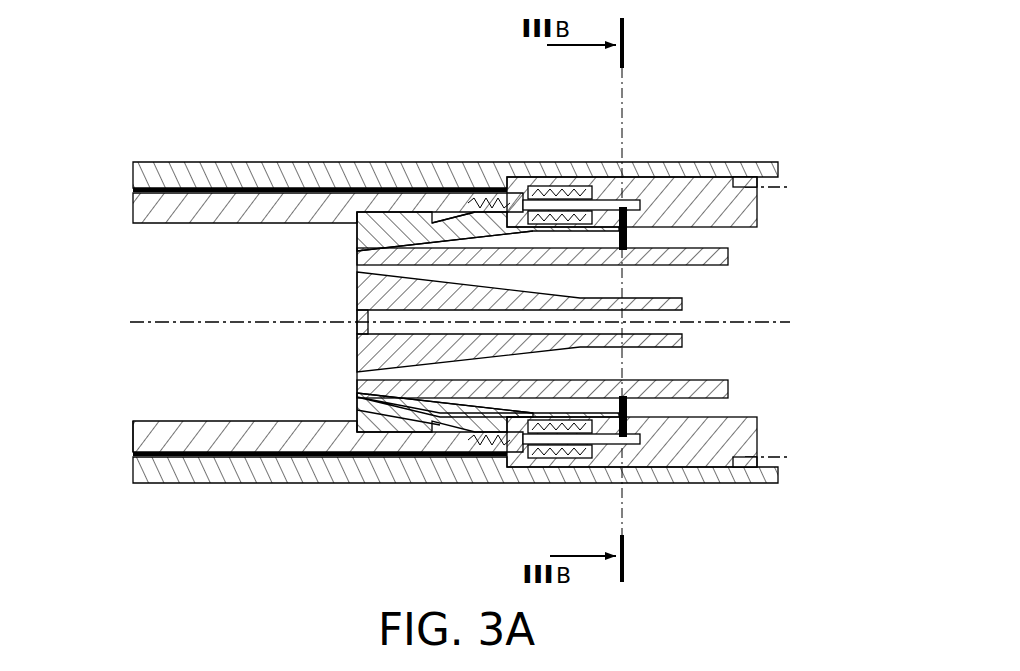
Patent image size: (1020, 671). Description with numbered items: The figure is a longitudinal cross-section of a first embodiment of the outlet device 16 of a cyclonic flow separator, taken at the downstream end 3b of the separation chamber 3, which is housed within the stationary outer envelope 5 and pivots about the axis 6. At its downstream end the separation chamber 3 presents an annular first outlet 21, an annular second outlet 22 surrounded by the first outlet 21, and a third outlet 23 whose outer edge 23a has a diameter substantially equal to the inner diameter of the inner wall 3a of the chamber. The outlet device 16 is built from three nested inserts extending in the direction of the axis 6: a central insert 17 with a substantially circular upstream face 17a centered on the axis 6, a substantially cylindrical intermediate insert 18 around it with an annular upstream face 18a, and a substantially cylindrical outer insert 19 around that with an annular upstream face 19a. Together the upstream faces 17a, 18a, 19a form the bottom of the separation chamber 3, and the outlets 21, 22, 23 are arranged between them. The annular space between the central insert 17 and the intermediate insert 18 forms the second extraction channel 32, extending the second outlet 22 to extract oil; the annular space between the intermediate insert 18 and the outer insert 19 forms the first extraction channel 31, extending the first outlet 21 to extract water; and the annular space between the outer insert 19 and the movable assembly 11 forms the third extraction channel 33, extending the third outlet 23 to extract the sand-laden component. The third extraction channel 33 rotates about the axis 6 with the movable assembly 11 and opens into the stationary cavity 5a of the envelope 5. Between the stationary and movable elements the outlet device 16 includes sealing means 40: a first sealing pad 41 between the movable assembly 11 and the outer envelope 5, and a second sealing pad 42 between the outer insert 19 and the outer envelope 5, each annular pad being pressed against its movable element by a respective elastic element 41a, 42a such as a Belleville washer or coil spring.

The separation chamber 3 is at (160, 275).
The inner wall 3a is at (222, 226).
The downstream end 3b is at (218, 341).
The stationary outer envelope 5 is at (160, 183).
The cavity 5a is at (629, 200).
The axis 6 is at (756, 320).
The movable assembly 11 is at (140, 204).
The outlet device 16 is at (410, 76).
The central insert 17 is at (466, 348).
The upstream face 17a is at (357, 352).
The intermediate insert 18 is at (432, 396).
The upstream face 18a is at (357, 382).
The outer insert 19 is at (386, 415).
The upstream face 19a is at (357, 412).
The first outlet 21 is at (352, 254).
The second outlet 22 is at (352, 268).
The third outlet 23 is at (349, 216).
The outer edge 23a is at (366, 214).
The first extraction channel 31 is at (469, 236).
The second extraction channel 32 is at (420, 275).
The third extraction channel 33 is at (440, 210).
The sealing means 40 is at (592, 108).
The first sealing pad 41 is at (553, 194).
The elastic element 41a is at (580, 442).
The second sealing pad 42 is at (568, 200).
The elastic element 42a is at (627, 472).